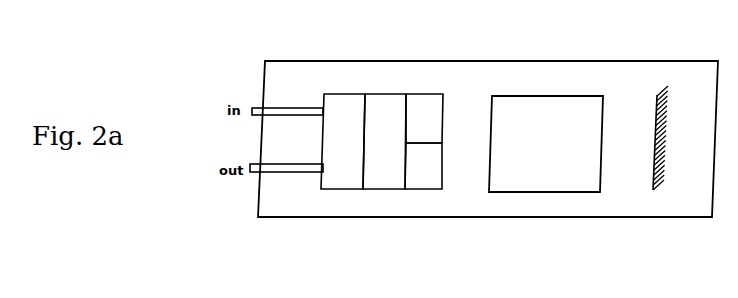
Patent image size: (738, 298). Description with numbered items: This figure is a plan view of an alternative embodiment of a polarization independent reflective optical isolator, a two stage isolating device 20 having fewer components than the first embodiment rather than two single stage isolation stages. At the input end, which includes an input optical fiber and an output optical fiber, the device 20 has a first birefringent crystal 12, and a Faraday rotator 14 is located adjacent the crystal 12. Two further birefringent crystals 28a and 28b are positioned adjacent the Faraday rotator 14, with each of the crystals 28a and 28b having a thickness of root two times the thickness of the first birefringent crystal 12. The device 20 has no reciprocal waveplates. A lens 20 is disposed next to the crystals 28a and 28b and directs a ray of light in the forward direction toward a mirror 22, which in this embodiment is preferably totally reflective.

The first birefringent crystal 12 is at (333, 93).
The Faraday rotator 14 is at (378, 93).
The device 20 is at (462, 61).
The mirror 22 is at (653, 190).
The birefringent crystal 28a is at (425, 189).
The birefringent crystal 28b is at (438, 93).